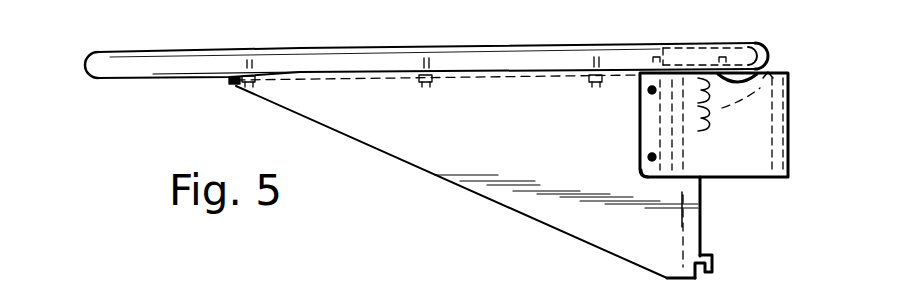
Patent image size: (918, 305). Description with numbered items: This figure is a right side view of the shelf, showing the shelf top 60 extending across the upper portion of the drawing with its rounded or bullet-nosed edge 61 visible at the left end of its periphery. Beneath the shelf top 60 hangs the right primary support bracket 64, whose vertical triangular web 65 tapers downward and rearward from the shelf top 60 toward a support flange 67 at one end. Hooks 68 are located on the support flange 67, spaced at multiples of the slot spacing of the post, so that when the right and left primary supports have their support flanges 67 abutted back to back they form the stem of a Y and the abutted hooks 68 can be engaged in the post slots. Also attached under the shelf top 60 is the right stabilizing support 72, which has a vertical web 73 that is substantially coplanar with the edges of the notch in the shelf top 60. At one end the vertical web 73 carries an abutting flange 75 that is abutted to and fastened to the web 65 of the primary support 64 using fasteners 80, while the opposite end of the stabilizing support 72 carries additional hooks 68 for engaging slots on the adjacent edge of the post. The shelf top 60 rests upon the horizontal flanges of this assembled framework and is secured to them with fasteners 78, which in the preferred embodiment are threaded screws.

The shelf top 60 is at (162, 52).
The rounded or bullet-nosed edge 61 is at (87, 61).
The right primary support bracket 64 is at (351, 139).
The vertical triangular web 65 is at (530, 152).
The support flange 67 is at (703, 218).
The hooks 68 is at (779, 60).
The right stabilizing support 72 is at (742, 178).
The vertical web 73 is at (758, 148).
The abutting flange 75 is at (643, 177).
The fasteners 78 is at (251, 83).
The fasteners 80 is at (650, 93).